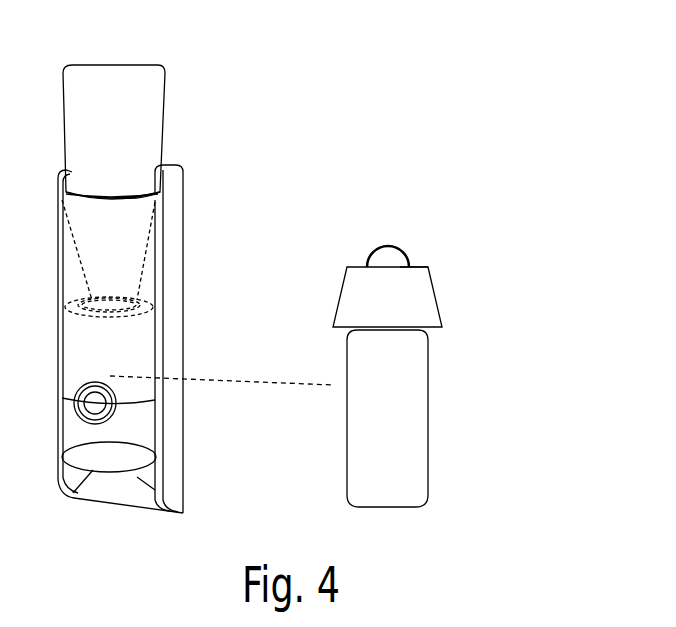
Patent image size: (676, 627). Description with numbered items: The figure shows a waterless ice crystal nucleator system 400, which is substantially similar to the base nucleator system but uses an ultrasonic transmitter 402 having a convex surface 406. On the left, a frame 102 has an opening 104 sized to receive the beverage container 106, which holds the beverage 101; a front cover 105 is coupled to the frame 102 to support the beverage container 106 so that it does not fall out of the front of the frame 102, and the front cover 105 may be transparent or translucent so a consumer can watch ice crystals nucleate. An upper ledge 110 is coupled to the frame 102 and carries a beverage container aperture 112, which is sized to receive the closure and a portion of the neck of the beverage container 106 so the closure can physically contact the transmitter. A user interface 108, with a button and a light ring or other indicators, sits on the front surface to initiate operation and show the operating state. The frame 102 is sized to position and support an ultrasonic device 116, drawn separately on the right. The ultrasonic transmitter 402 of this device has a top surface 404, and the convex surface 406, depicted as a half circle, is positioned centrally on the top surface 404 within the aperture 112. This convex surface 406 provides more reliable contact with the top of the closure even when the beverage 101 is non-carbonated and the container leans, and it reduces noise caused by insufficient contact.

The waterless ice crystal nucleator system 400 is at (156, 373).
The frame 102 is at (175, 485).
The beverage 101 is at (153, 132).
The beverage container 106 is at (165, 78).
The opening 104 is at (183, 167).
The front cover 105 is at (150, 200).
The beverage container aperture 112 is at (150, 302).
The upper ledge 110 is at (137, 313).
The user interface 108 is at (105, 406).
The ultrasonic device 116 is at (428, 390).
The ultrasonic transmitter 402 is at (437, 294).
The top surface 404 is at (412, 265).
The convex surface 406 is at (390, 242).